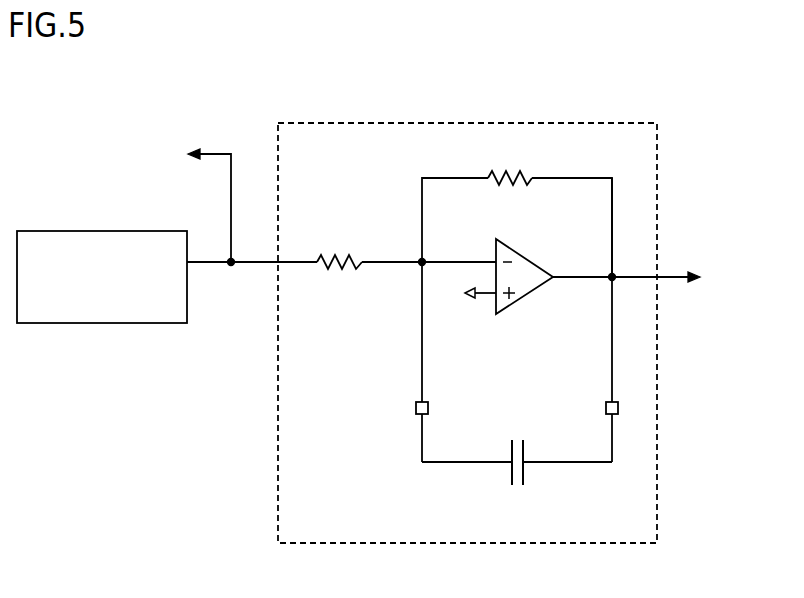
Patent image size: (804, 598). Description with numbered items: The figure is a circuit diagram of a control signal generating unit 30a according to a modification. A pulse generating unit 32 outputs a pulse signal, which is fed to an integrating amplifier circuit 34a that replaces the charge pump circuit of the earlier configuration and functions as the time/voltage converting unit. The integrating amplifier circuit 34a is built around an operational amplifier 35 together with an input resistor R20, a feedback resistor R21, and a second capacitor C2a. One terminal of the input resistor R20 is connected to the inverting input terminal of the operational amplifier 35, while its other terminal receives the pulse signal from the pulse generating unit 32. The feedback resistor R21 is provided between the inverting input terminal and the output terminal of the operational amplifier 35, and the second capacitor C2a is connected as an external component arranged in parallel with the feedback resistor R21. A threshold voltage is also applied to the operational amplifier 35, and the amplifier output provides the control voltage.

The control signal generating unit 30a is at (248, 577).
The pulse generating unit 32 is at (152, 231).
The integrating amplifier circuit 34a is at (578, 123).
The operational amplifier 35 is at (527, 253).
The input resistor R20 is at (341, 247).
The feedback resistor R21 is at (511, 164).
The second capacitor C2a is at (517, 479).